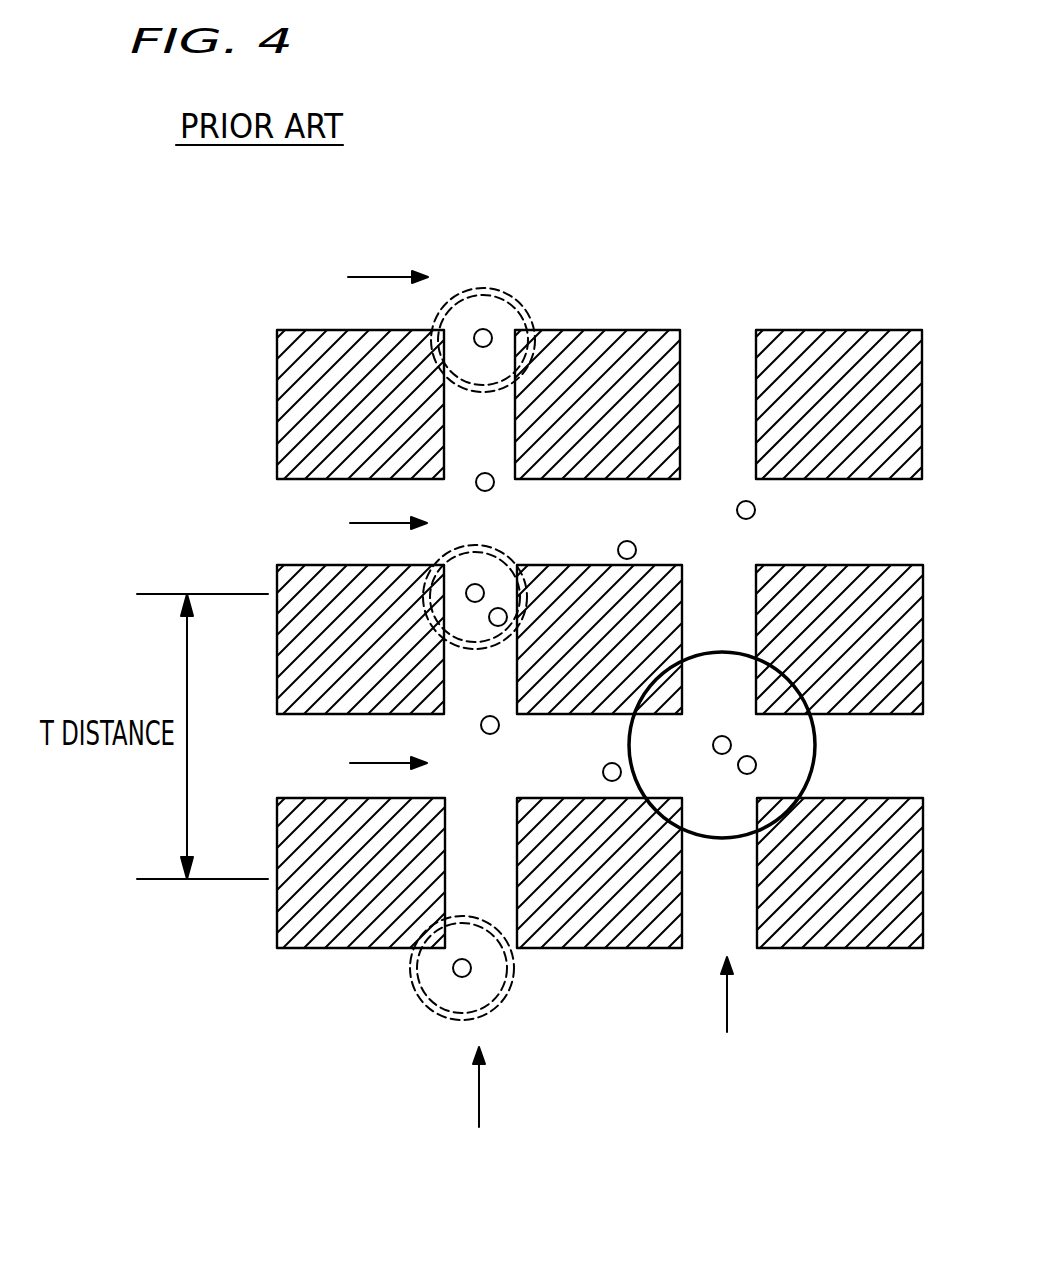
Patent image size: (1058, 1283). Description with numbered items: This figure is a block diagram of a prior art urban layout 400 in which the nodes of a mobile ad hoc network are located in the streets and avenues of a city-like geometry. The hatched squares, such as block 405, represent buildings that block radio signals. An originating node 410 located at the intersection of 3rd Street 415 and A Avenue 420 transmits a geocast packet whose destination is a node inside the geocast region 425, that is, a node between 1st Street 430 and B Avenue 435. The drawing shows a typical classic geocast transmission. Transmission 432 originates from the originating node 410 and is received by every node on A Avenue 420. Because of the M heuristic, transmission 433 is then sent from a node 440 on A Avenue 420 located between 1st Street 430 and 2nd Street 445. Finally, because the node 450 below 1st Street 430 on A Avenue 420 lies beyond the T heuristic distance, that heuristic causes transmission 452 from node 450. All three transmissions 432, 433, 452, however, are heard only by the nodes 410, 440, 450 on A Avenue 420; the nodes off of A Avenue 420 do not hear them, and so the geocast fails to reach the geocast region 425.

The urban layout 400 is at (708, 254).
The block 405 is at (613, 328).
The originating node 410 is at (480, 329).
The 3rd Street 415 is at (192, 276).
The A Avenue 420 is at (398, 1148).
The geocast region 425 is at (800, 757).
The 1st Street 430 is at (257, 738).
The transmission 432 is at (502, 310).
The transmission 433 is at (500, 572).
The B Avenue 435 is at (787, 1056).
The node 440 is at (475, 602).
The 2nd Street 445 is at (183, 526).
The node 450 is at (453, 970).
The transmission 452 is at (478, 998).